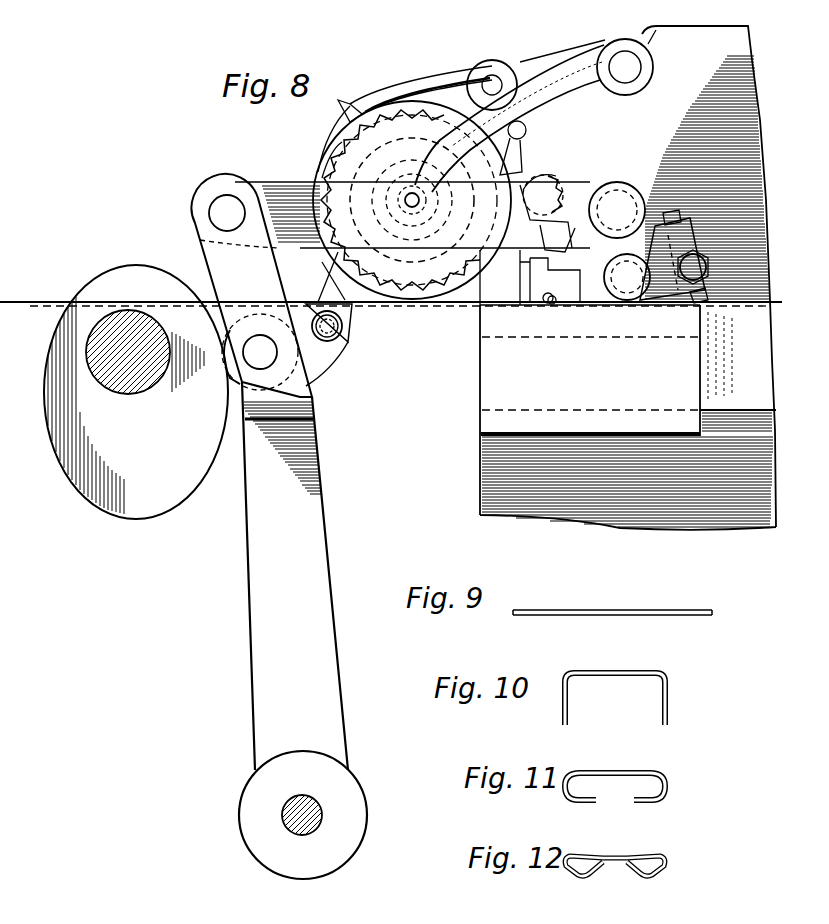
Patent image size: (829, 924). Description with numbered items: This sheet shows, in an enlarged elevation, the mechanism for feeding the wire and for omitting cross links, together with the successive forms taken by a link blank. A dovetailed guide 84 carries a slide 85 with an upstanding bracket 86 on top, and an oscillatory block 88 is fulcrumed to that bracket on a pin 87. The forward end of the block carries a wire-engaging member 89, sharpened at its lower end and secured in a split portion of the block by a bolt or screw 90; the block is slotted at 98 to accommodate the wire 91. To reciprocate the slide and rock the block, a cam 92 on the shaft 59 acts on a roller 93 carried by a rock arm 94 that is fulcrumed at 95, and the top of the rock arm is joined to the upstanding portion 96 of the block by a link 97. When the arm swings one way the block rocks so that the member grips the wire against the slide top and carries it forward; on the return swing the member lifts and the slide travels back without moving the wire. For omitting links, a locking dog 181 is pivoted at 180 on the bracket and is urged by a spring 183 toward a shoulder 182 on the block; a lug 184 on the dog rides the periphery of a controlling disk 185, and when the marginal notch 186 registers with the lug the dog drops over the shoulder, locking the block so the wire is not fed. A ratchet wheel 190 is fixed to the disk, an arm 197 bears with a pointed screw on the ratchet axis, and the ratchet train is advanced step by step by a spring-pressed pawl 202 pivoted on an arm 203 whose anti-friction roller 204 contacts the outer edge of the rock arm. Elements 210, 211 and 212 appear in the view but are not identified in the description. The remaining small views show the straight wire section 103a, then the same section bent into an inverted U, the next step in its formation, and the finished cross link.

In FIG. 8, the shaft 59 is at (108, 382).
In FIG. 8, the dovetailed guide 84 is at (628, 278).
In FIG. 8, the slide 85 is at (590, 369).
In FIG. 8, the upstanding bracket 86 is at (505, 277).
In FIG. 8, the pin 87 is at (627, 300).
In FIG. 8, the oscillatory block 88 is at (600, 303).
In FIG. 8, the wire-engaging member 89 is at (692, 304).
In FIG. 8, the bolt or screw 90 is at (707, 272).
In FIG. 8, the wire 91 is at (30, 302).
In FIG. 8, the cam 92 is at (136, 392).
In FIG. 8, the roller 93 is at (228, 372).
In FIG. 8, the rock arm 94 is at (295, 576).
In FIG. 8, the fulcrum 95 is at (302, 795).
In FIG. 8, the upstanding portion 96 is at (626, 184).
In FIG. 8, the link 97 is at (290, 182).
In FIG. 8, the slot 98 is at (546, 304).
In FIG. 9, the wire section 103a is at (603, 610).
In FIG. 8, the pivot 180 is at (540, 172).
In FIG. 8, the locking dog 181 is at (547, 218).
In FIG. 8, the shoulder 182 is at (555, 281).
In FIG. 8, the spring 183 is at (558, 180).
In FIG. 8, the lug 184 is at (528, 134).
In FIG. 8, the controlling disk 185 is at (352, 130).
In FIG. 8, the marginal notch 186 is at (421, 200).
In FIG. 8, the ratchet wheel 190 is at (333, 149).
In FIG. 8, the arm 197 is at (547, 78).
In FIG. 8, the spring-pressed pawl 202 is at (320, 277).
In FIG. 8, the arm 203 is at (343, 322).
In FIG. 8, the anti-friction roller 204 is at (330, 363).
In FIG. 8, the band 210 is at (420, 84).
In FIG. 8, the band tip 211 is at (350, 110).
In FIG. 8, the inner circle 212 is at (412, 200).